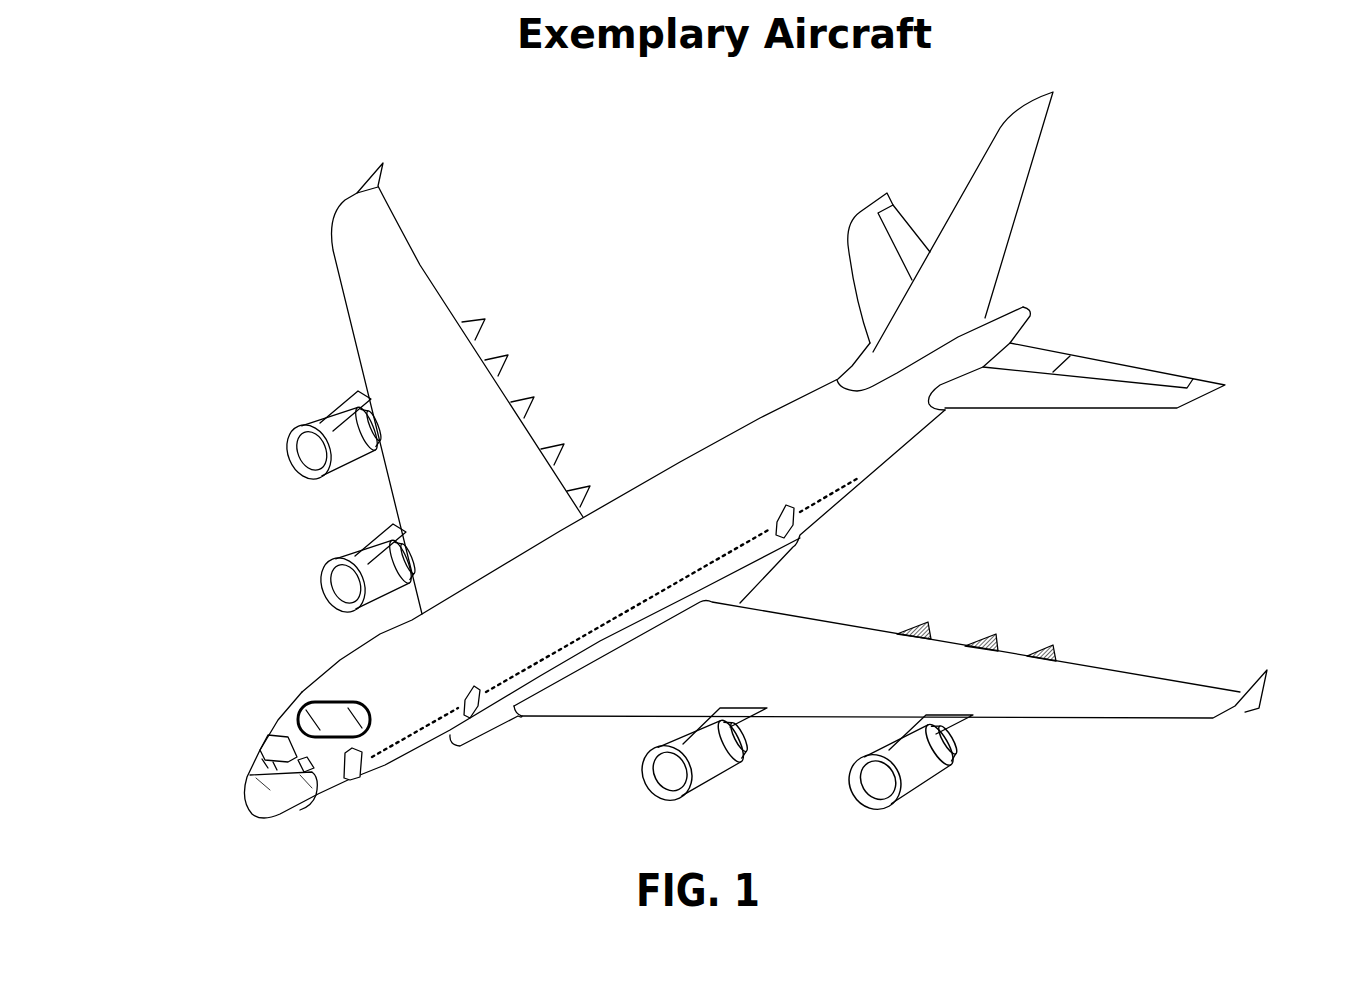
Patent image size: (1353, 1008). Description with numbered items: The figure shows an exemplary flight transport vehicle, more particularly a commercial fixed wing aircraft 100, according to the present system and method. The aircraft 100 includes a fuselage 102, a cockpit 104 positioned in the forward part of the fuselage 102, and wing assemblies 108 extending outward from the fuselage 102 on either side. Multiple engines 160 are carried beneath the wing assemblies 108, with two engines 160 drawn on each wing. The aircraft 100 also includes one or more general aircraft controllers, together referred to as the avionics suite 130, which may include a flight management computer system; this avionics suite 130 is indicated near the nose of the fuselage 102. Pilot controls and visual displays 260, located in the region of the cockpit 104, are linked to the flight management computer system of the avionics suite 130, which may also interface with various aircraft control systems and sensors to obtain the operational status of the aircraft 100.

The aircraft 100 is at (699, 455).
The fuselage 102 is at (678, 464).
The cockpit 104 is at (279, 738).
The wing assemblies 108 is at (352, 224).
The avionics suite 130 is at (322, 790).
The engines 160 is at (323, 430).
The pilot controls and visual displays 260 is at (283, 791).